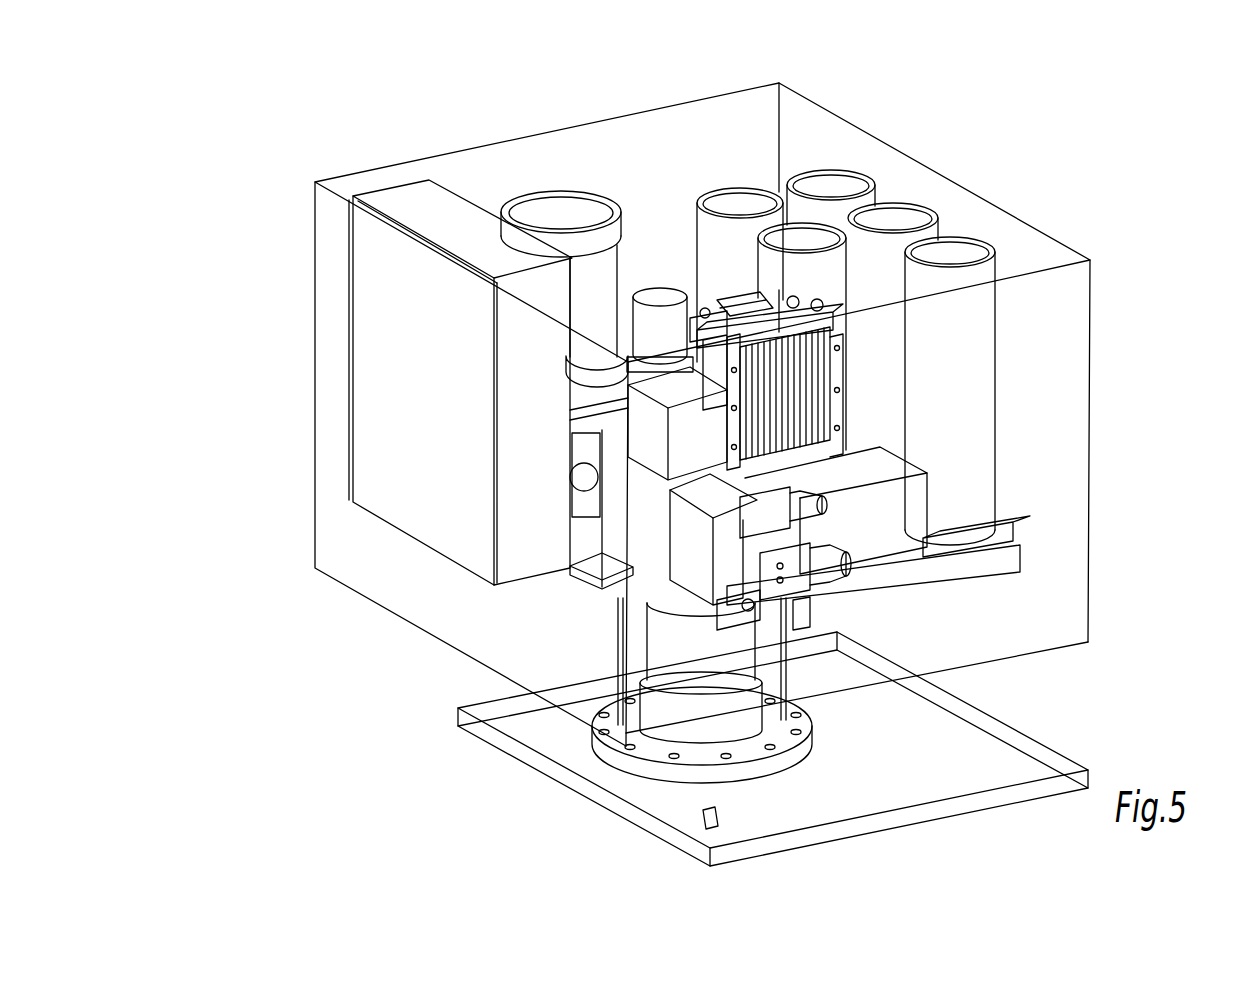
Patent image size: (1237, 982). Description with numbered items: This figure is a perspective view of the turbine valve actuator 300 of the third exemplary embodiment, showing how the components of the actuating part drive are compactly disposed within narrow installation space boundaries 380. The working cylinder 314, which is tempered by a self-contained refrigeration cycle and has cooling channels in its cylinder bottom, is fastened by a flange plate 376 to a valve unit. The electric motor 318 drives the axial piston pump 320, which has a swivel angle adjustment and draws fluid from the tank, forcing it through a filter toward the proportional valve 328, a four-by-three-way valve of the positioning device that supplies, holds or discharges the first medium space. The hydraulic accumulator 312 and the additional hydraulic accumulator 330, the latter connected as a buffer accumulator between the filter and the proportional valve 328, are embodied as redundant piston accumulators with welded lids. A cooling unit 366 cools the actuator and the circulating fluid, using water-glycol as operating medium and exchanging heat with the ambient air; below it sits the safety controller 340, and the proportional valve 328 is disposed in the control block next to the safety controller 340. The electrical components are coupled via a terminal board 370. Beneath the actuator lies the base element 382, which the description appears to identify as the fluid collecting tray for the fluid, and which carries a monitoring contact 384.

The turbine valve actuator 300 is at (1017, 147).
The hydraulic accumulator 312 is at (997, 390).
The working cylinder 314 is at (688, 652).
The electric motor 318 is at (552, 207).
The axial piston pump 320 is at (577, 473).
The proportional valve 328 is at (905, 549).
The additional hydraulic accumulator 330 is at (750, 200).
The safety controller 340 is at (845, 607).
The cooling unit 366 is at (818, 408).
The terminal board 370 is at (350, 420).
The flange plate 376 is at (627, 760).
The installation space boundaries 380 is at (313, 333).
The base plate 382 is at (637, 818).
The monitoring contact 384 is at (720, 818).